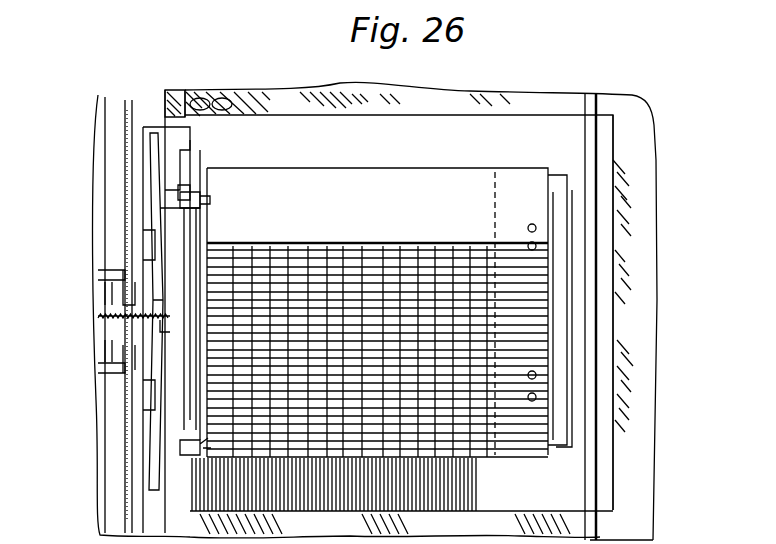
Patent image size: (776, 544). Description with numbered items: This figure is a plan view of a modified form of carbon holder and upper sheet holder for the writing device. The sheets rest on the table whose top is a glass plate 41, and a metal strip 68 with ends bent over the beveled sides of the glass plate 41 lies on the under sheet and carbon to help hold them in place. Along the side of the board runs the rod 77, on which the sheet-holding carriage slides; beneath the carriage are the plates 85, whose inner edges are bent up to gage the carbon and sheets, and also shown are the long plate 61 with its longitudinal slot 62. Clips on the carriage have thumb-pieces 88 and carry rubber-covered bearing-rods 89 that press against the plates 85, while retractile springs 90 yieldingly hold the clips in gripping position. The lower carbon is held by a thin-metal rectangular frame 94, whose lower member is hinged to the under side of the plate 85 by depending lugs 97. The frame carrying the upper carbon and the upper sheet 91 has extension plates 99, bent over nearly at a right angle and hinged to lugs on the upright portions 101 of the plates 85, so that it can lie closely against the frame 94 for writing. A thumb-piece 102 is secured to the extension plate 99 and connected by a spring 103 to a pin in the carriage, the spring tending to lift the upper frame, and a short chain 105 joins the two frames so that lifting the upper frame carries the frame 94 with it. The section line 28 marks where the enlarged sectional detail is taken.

The section line 28— 28 is at (665, 307).
The glass plate 41 is at (430, 102).
The long plate 61 is at (143, 105).
The longitudinal slot 62 is at (186, 92).
The metal strip 68 is at (592, 372).
The rod 77 is at (118, 140).
The plates 85 is at (228, 104).
The thumb-pieces 88 is at (100, 300).
The bearing-rods 89 is at (170, 170).
The retractile springs 90 is at (147, 240).
The upper sheet 91 is at (377, 312).
The rectangular frame 94 is at (561, 223).
The lugs 97 is at (185, 188).
The extension plates 99 is at (195, 205).
The upright portions 101 is at (160, 175).
The thumb-piece 102 is at (185, 305).
The spring 103 is at (110, 322).
The short chain 105 is at (200, 200).